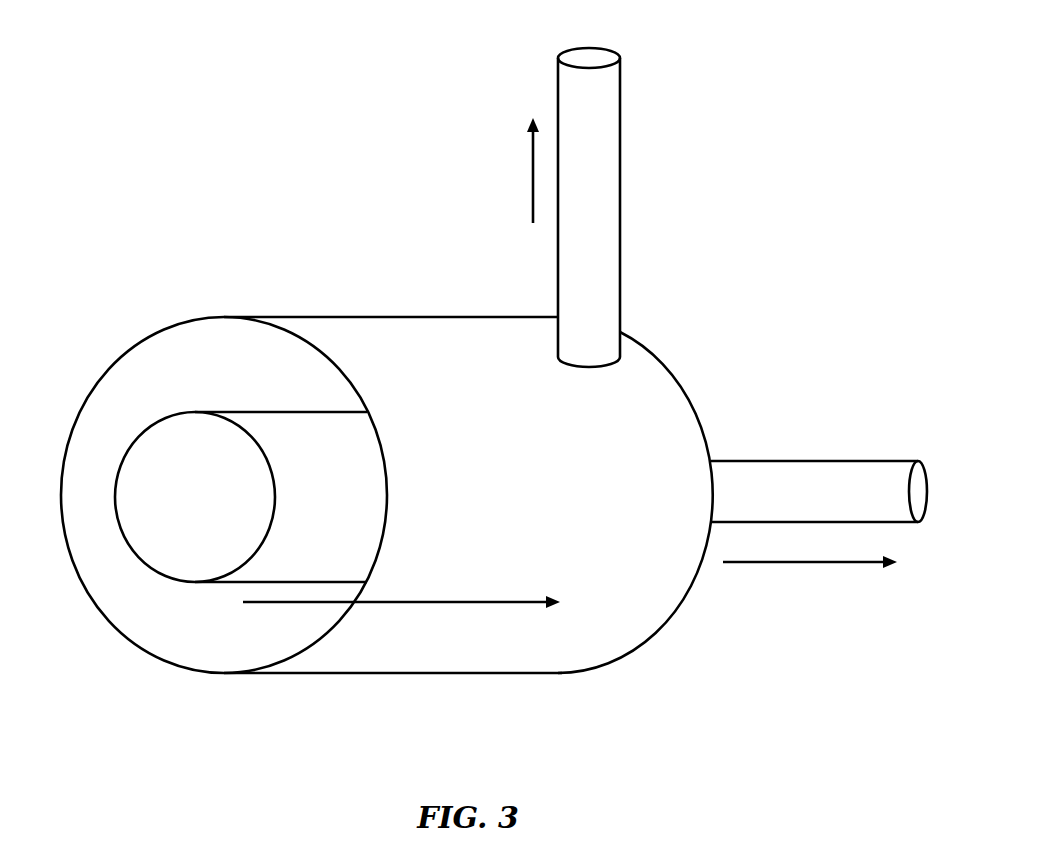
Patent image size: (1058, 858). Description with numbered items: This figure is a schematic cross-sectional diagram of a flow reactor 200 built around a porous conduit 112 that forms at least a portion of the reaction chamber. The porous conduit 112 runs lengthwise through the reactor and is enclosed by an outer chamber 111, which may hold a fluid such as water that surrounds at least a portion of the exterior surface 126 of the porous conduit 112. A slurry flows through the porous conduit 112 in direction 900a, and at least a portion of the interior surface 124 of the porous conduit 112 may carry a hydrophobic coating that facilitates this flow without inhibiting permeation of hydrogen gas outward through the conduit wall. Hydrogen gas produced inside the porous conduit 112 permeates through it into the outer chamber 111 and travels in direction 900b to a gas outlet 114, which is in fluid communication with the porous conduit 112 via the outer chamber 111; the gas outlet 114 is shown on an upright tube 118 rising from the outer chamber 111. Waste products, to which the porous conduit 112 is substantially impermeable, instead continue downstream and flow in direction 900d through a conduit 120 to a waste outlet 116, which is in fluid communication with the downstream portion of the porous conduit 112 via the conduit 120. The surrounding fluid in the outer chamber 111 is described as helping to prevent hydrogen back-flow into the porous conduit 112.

The flow reactor 200 is at (501, 340).
The outer chamber 111 is at (387, 495).
The porous conduit 112 is at (241, 471).
The gas outlet 114 is at (588, 49).
The waste outlet 116 is at (930, 492).
The first conduit 118 is at (606, 187).
The conduit 120 is at (836, 482).
The interior surface 124 is at (235, 569).
The exterior surface 126 is at (321, 411).
The direction 900a is at (424, 604).
The direction 900b is at (530, 163).
The direction 900d is at (772, 563).